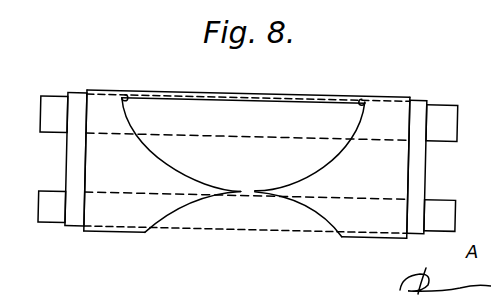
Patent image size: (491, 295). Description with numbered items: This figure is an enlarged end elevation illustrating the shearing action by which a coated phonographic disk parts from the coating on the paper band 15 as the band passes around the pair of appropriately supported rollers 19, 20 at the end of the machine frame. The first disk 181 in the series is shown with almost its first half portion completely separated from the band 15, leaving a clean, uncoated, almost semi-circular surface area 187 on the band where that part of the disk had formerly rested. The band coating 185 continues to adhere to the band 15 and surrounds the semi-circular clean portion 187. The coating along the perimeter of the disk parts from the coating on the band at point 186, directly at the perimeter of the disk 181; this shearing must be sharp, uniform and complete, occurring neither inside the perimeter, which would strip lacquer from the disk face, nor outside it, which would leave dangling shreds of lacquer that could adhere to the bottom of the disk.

The band 15 is at (68, 159).
The roller 19 is at (53, 97).
The roller 20 is at (55, 211).
The first disk 181 is at (222, 91).
The band coating 185 is at (118, 233).
The shearing point 186 is at (124, 95).
The uncoated surface area 187 is at (262, 153).